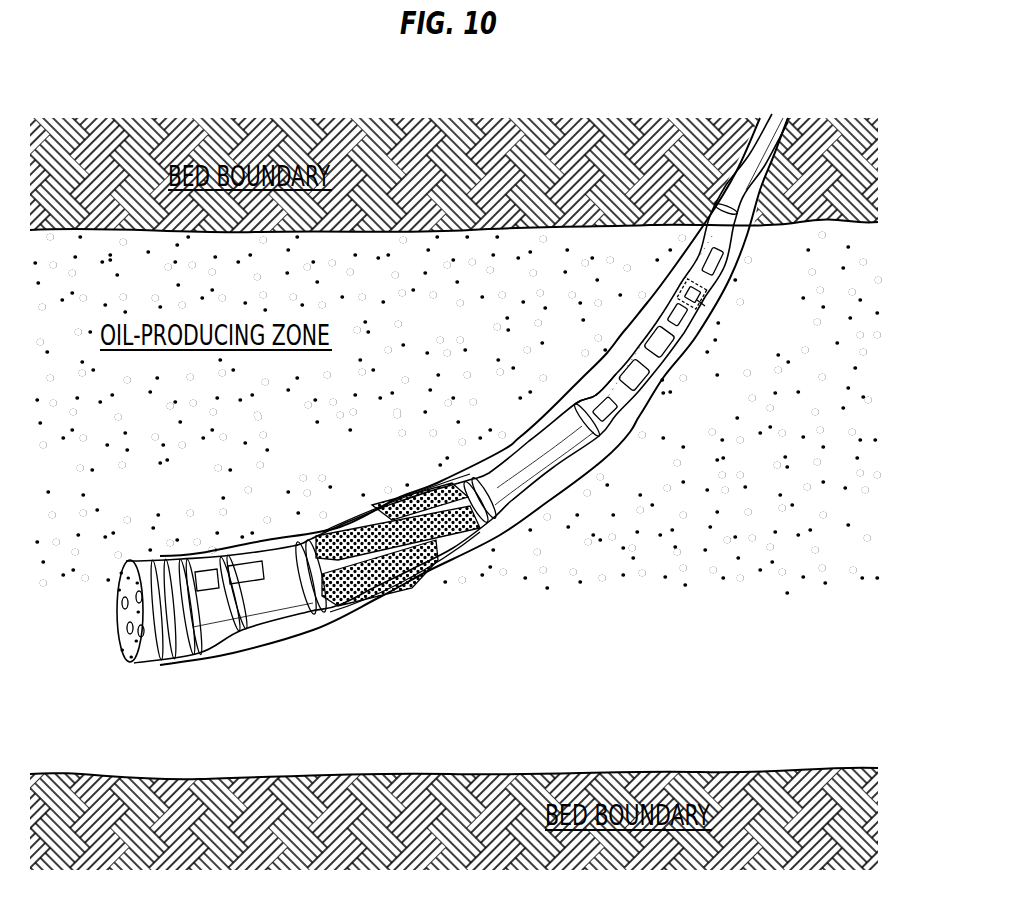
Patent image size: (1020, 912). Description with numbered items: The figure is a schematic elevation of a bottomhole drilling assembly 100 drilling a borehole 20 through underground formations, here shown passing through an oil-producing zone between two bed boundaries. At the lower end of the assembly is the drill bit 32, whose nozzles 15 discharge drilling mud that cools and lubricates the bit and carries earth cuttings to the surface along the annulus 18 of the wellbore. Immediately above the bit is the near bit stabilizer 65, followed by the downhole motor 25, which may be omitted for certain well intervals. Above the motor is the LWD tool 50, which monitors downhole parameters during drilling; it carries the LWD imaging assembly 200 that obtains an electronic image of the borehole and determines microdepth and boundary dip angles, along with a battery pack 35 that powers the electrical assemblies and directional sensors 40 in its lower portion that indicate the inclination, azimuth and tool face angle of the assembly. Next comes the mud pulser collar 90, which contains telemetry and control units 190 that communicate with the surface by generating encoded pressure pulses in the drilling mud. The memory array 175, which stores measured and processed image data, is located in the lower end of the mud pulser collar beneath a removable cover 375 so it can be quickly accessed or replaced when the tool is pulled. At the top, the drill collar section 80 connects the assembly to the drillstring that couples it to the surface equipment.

The bottomhole drilling assembly 100 is at (510, 345).
The annulus 18 is at (550, 493).
The borehole 20 is at (607, 450).
The downhole motor 25 is at (523, 445).
The LWD tool 50 is at (596, 387).
The near bit stabilizer 65 is at (430, 580).
The nozzles 15 is at (120, 603).
The drill bit 32 is at (127, 650).
The drill collar section 80 is at (755, 182).
The memory array 175 is at (693, 303).
The telemetry and control units 190 is at (712, 257).
The mud pulser collar 90 is at (707, 283).
The removable cover 375 is at (694, 298).
The battery pack 35 is at (673, 317).
The LWD imaging assembly 200 is at (633, 377).
The directional sensors 40 is at (610, 407).